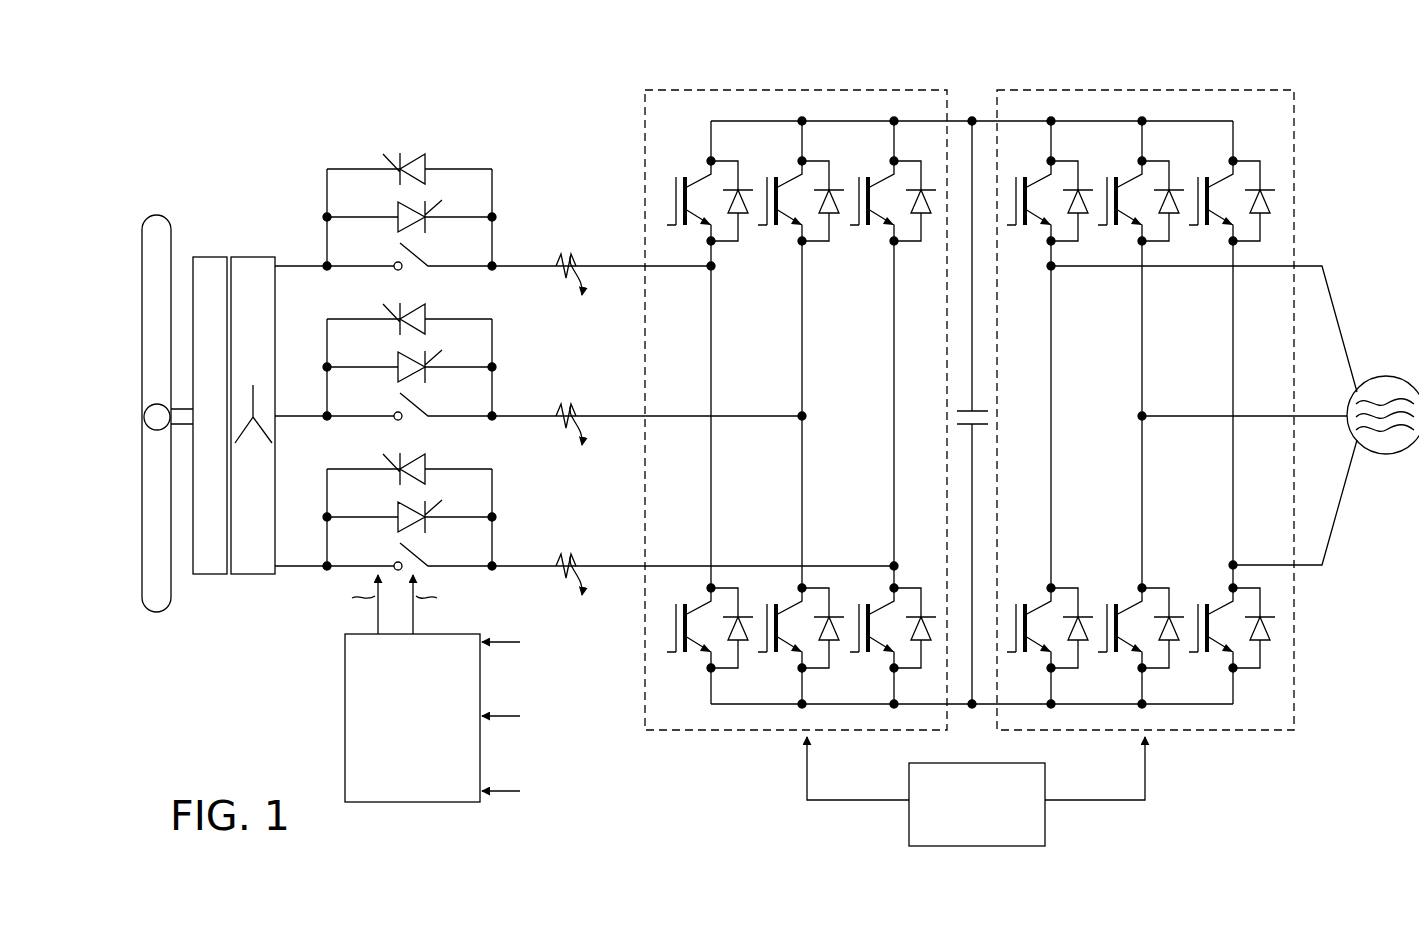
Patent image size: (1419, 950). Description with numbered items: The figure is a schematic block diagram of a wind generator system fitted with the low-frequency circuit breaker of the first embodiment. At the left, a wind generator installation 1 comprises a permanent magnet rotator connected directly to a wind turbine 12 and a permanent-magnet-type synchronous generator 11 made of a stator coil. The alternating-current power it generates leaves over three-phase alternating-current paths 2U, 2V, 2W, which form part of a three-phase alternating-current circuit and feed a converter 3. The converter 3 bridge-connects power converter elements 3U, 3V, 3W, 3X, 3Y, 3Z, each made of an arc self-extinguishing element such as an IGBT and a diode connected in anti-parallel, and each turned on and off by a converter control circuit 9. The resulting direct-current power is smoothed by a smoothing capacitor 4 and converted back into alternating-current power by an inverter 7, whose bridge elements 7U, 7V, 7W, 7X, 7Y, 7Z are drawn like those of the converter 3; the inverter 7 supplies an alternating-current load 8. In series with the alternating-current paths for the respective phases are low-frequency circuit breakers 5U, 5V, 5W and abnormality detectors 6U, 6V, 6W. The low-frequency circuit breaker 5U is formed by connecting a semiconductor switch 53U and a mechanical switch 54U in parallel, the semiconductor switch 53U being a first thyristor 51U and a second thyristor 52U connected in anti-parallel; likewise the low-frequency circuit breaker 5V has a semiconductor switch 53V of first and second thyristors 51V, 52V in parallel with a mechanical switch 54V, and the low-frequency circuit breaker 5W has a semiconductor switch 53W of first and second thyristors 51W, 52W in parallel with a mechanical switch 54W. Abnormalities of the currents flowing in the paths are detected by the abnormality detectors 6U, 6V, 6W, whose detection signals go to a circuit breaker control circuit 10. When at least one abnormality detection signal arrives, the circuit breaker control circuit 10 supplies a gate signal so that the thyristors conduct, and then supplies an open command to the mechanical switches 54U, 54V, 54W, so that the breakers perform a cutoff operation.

The wind generator installation 1 is at (192, 216).
The wind turbine 12 is at (155, 215).
The permanent-magnet-type synchronous generator 11 is at (230, 257).
The three-phase alternating-current path 2U is at (301, 262).
The three-phase alternating-current path 2V is at (301, 411).
The three-phase alternating-current path 2W is at (301, 562).
The low-frequency circuit breaker 5U is at (510, 202).
The low-frequency circuit breaker 5V is at (510, 352).
The low-frequency circuit breaker 5W is at (510, 502).
The first thyristor 51U is at (428, 160).
The first thyristor 51V is at (428, 310).
The first thyristor 51W is at (428, 460).
The second thyristor 52U is at (398, 222).
The second thyristor 52V is at (398, 372).
The second thyristor 52W is at (398, 522).
The semiconductor switch 53U is at (408, 195).
The semiconductor switch 53V is at (408, 345).
The semiconductor switch 53W is at (408, 495).
The mechanical switch 54U is at (428, 249).
The mechanical switch 54V is at (428, 399).
The mechanical switch 54W is at (428, 549).
The abnormality detector 6U is at (559, 260).
The abnormality detector 6V is at (559, 410).
The abnormality detector 6W is at (559, 560).
The converter 3 is at (777, 87).
The power converter element 3U is at (717, 160).
The power converter element 3V is at (808, 160).
The power converter element 3W is at (900, 160).
The power converter element 3X is at (721, 670).
The power converter element 3Y is at (812, 670).
The power converter element 3Z is at (904, 670).
The smoothing capacitor 4 is at (978, 409).
The inverter 7 is at (1135, 87).
The inverter U-phase upper IGBT 7U is at (1057, 160).
The inverter V-phase upper IGBT 7V is at (1148, 160).
The inverter W-phase upper IGBT 7W is at (1239, 160).
The inverter U-phase lower IGBT 7X is at (1061, 670).
The inverter V-phase lower IGBT 7Y is at (1152, 670).
The inverter W-phase lower IGBT 7Z is at (1243, 670).
The alternating-current load 8 is at (1388, 375).
The converter control circuit 9 is at (988, 762).
The circuit breaker control circuit 10 is at (345, 659).